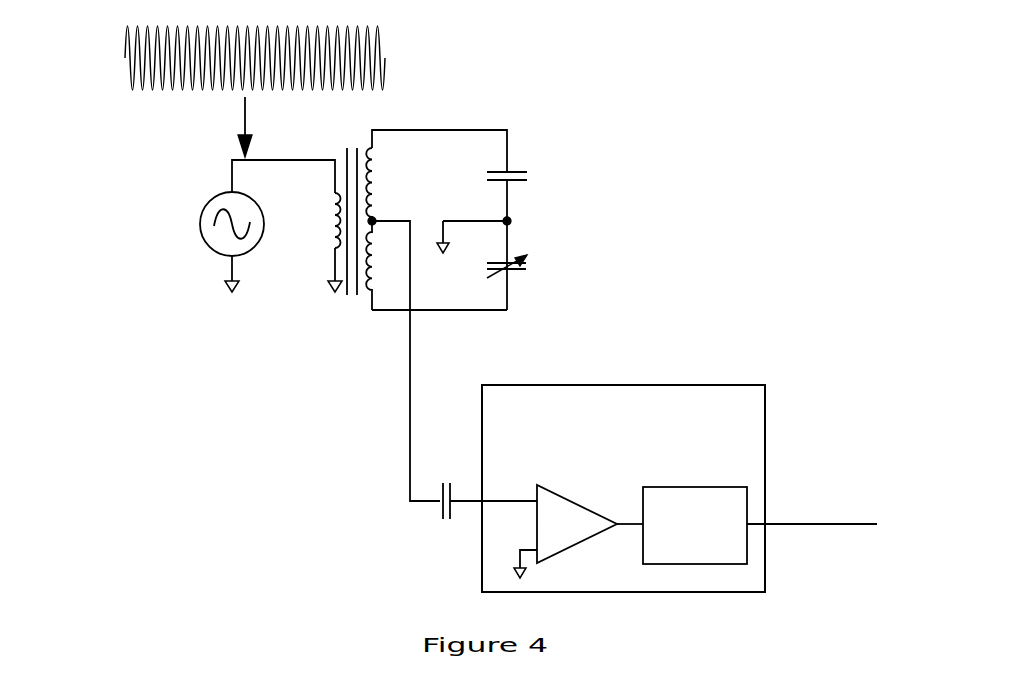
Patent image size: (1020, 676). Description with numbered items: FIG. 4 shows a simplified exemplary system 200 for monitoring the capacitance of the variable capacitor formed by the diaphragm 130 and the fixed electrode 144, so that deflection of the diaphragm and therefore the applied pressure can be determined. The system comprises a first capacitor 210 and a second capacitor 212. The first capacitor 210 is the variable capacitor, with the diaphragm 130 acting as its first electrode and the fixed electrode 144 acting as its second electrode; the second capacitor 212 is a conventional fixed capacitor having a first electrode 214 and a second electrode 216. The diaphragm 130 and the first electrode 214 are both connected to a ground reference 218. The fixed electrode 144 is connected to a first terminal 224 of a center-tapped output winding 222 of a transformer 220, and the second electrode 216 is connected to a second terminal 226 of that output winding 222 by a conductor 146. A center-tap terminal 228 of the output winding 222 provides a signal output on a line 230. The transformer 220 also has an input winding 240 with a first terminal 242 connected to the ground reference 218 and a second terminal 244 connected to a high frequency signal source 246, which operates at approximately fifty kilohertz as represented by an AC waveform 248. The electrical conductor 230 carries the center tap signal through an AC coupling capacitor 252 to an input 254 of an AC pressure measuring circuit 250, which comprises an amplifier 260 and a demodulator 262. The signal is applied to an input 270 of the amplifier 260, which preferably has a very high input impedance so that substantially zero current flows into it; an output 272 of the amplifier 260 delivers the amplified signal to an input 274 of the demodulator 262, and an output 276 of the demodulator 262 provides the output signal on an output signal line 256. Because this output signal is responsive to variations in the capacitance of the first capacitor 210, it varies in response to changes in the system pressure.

The diaphragm 130 is at (503, 260).
The fixed electrode 144 is at (513, 269).
The conductor 146 is at (462, 311).
The system 200 is at (185, 295).
The first capacitor 210 is at (539, 255).
The second capacitor 212 is at (537, 165).
The first electrode 214 is at (513, 182).
The second electrode 216 is at (494, 170).
The ground reference 218 is at (334, 280).
The transformer 220 is at (354, 306).
The output winding 222 is at (381, 189).
The first terminal 224 is at (373, 300).
The second terminal 226 is at (375, 148).
The center-tap terminal 228 is at (376, 217).
The line 230 is at (410, 365).
The input winding 240 is at (320, 189).
The first terminal 242 is at (332, 250).
The second terminal 244 is at (338, 194).
The high frequency signal source 246 is at (255, 247).
The AC waveform 248 is at (398, 57).
The AC pressure measuring circuit 250 is at (661, 385).
The AC coupling capacitor 252 is at (440, 490).
The input 254 is at (478, 503).
The output signal line 256 is at (843, 527).
The amplifier 260 is at (582, 500).
The demodulator 262 is at (670, 487).
The input 270 is at (530, 501).
The output 272 is at (620, 530).
The input 274 is at (638, 524).
The output 276 is at (750, 524).